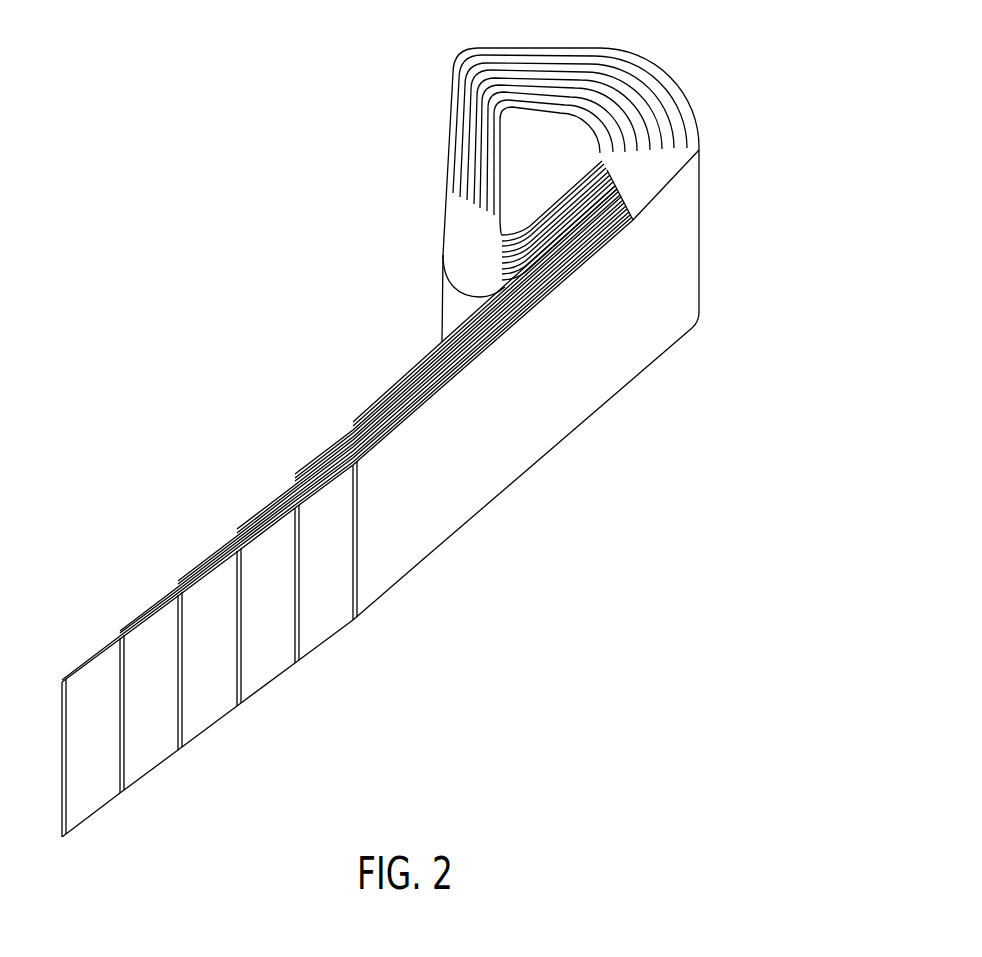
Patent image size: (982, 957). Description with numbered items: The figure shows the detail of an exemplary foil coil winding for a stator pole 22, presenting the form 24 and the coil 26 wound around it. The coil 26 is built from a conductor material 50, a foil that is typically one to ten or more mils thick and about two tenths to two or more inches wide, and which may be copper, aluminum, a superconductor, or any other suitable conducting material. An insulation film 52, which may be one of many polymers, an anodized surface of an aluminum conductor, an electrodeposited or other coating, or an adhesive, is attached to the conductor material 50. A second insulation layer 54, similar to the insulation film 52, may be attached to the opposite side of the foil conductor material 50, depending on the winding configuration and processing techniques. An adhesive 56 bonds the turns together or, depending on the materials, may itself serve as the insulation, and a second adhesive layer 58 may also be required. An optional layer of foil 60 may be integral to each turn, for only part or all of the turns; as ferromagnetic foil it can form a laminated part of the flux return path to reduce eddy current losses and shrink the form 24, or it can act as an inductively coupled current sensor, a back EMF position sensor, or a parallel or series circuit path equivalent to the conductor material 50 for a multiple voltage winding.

The stator pole 22 is at (698, 145).
The form 24 is at (587, 133).
The coil 26 is at (587, 420).
The conductor material 50 is at (277, 682).
The insulation film 52 is at (330, 645).
The second insulation layer 54 is at (223, 720).
The adhesive 56 is at (382, 608).
The second adhesive layer 58 is at (157, 777).
The layer of foil 60 is at (88, 833).